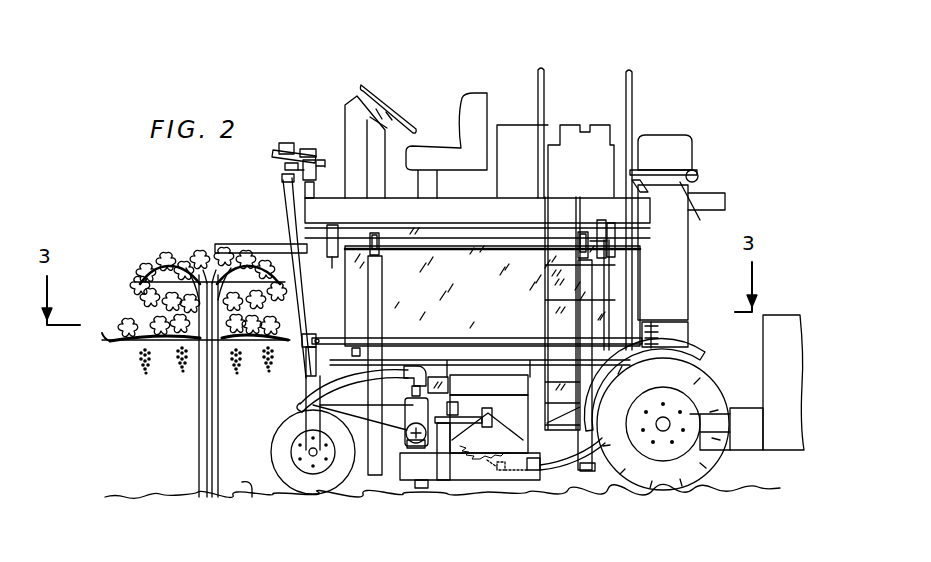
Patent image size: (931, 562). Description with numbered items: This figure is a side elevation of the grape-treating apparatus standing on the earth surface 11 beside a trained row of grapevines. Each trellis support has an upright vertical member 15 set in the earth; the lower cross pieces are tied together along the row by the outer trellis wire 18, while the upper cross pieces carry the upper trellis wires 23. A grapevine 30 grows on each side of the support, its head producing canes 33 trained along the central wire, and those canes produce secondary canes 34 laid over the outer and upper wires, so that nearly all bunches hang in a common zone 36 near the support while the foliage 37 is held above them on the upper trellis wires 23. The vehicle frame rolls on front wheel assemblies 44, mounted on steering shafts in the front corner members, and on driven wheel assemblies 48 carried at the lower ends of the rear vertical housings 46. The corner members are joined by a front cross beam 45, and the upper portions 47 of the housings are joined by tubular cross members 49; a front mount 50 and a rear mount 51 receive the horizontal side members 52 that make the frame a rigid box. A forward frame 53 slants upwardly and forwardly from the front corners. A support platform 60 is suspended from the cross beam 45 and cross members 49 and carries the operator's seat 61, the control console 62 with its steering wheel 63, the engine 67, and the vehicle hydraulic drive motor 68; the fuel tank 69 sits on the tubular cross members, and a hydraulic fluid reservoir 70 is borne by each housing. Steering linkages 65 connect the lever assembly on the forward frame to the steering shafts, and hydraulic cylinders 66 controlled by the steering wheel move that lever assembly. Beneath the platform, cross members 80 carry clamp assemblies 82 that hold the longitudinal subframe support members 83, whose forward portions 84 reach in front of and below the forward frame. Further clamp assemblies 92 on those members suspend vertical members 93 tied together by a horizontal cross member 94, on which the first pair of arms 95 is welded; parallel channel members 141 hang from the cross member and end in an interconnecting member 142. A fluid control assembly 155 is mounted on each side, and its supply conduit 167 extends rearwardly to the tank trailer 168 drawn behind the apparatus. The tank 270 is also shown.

The earth surface 11 is at (240, 481).
The vertical member 15 is at (205, 452).
The outer trellis wire 18 is at (124, 343).
The upper trellis wires 23 is at (218, 280).
The grapevine 30 is at (206, 398).
The canes 33 is at (112, 341).
The secondary canes 34 is at (180, 268).
The common zone 36 is at (268, 340).
The foliage 37 is at (132, 272).
The front wheel assembly 44 is at (310, 488).
The front cross beam 45 is at (316, 184).
The rear vertical housings 46 is at (688, 330).
The upper portions 47 is at (700, 211).
The driven wheel assemblies 48 is at (666, 383).
The tubular cross members 49 is at (698, 172).
The front mount 50 is at (318, 340).
The rear mount 51 is at (654, 330).
The horizontal side members 52 is at (424, 341).
The forward frame 53 is at (288, 200).
The support platform 60 is at (482, 219).
The operator's seat 61 is at (488, 159).
The control console 62 is at (352, 105).
The steering wheel 63 is at (378, 94).
The steering linkages 65 is at (298, 152).
The hydraulic cylinders 66 is at (278, 159).
The engine 67 is at (586, 165).
The vehicle hydraulic drive motor 68 is at (672, 163).
The fuel tank 69 is at (675, 241).
The hydraulic fluid reservoir 70 is at (632, 96).
The cross members 80 is at (334, 226).
The clamp assemblies 82 is at (645, 256).
The subframe support member 83 is at (500, 249).
The forward portions 84 is at (222, 244).
The clamp assemblies 92 is at (378, 236).
The vertical member 93 is at (384, 272).
The horizontal cross member 94 is at (500, 370).
The first pair of arms 95 is at (353, 360).
The parallel channel members 141 is at (480, 359).
The interconnecting member 142 is at (498, 395).
The fluid control assembly 155 is at (538, 482).
The supply conduit 167 is at (760, 410).
The tank trailer 168 is at (796, 353).
The tank 270 is at (490, 298).